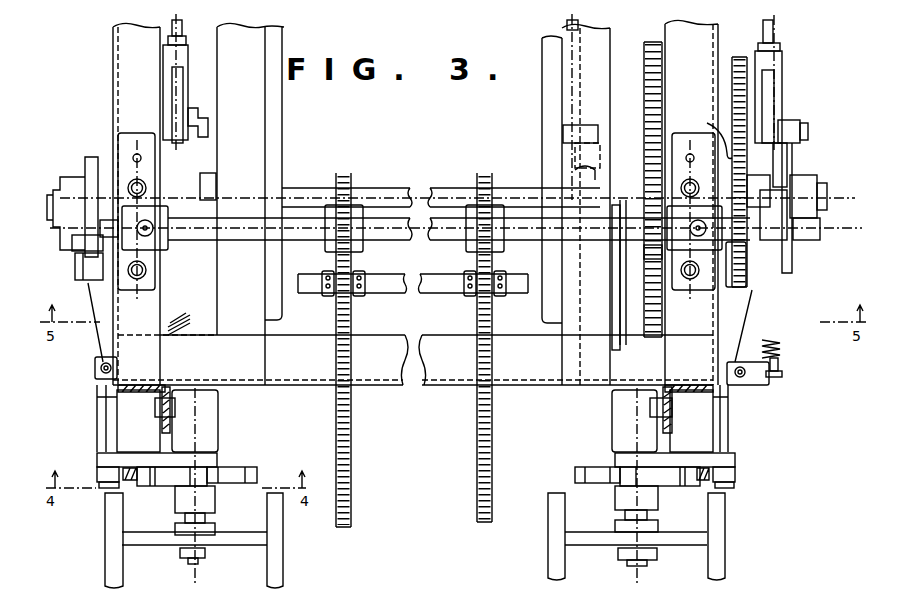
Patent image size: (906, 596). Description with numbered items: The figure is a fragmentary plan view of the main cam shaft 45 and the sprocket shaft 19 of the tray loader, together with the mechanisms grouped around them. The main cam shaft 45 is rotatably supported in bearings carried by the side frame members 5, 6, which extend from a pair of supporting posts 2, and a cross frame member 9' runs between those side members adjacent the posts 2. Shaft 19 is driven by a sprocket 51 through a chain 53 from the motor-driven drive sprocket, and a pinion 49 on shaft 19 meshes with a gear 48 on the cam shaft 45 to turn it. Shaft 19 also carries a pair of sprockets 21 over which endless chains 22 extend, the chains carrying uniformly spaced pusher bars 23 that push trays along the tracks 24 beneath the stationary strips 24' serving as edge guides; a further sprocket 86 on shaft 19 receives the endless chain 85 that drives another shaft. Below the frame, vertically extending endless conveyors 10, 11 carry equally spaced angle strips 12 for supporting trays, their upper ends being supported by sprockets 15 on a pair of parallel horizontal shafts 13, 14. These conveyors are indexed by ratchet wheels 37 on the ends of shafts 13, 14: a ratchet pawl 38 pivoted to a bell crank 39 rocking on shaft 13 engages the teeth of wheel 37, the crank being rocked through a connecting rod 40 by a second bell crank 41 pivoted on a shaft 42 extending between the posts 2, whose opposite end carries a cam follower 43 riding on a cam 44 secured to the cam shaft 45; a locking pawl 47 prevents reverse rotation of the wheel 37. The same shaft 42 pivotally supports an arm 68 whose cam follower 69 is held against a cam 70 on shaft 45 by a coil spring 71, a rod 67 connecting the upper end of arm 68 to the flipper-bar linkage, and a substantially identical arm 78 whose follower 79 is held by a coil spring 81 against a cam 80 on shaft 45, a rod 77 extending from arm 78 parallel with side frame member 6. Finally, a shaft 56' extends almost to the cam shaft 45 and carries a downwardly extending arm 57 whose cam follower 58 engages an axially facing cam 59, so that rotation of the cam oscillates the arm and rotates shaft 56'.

The supporting posts 2 is at (162, 430).
The side frame member 5 is at (118, 51).
The side frame member 6 is at (718, 30).
The cross frame member 9' is at (413, 373).
The endless conveyor 10 is at (235, 547).
The endless conveyor 11 is at (597, 521).
The angle strips 12 is at (105, 569).
The shaft 13 is at (181, 559).
The shaft 14 is at (648, 562).
The sprockets 15 is at (143, 547).
The shaft 19 is at (388, 242).
The sprockets 21 is at (356, 207).
The endless chains 22 is at (351, 462).
The pusher bars 23 is at (386, 294).
The tracks 24 is at (413, 204).
The stationary strips 24' is at (427, 223).
The ratchet wheels 37 is at (252, 467).
The ratchet pawl 38 is at (162, 487).
The bell crank 39 is at (214, 446).
The connecting rod 40 is at (96, 472).
The second bell crank 41 is at (97, 400).
The shaft 42 is at (75, 265).
The cam follower 43 is at (90, 286).
The cam 44 is at (88, 157).
The main cam shaft 45 is at (297, 191).
The locking pawl 47 is at (133, 481).
The gear 48 is at (646, 46).
The pinion 49 is at (645, 252).
The sprocket 51 is at (620, 306).
The chain 53 is at (612, 286).
The shaft 56' is at (539, 31).
The arm 57 is at (563, 128).
The cam follower 58 is at (575, 150).
The cam 59 is at (575, 172).
The rod 67 is at (182, 31).
The arm 68 is at (177, 120).
The cam follower 69 is at (197, 108).
The cam 70 is at (216, 161).
The coil spring 71 is at (188, 328).
The rod 77 is at (775, 31).
The arm 78 is at (775, 123).
The cam follower 79 is at (797, 122).
The cam 80 is at (788, 162).
The coil spring 81 is at (782, 349).
The endless chain 85 is at (732, 79).
The sprocket 86 is at (748, 263).